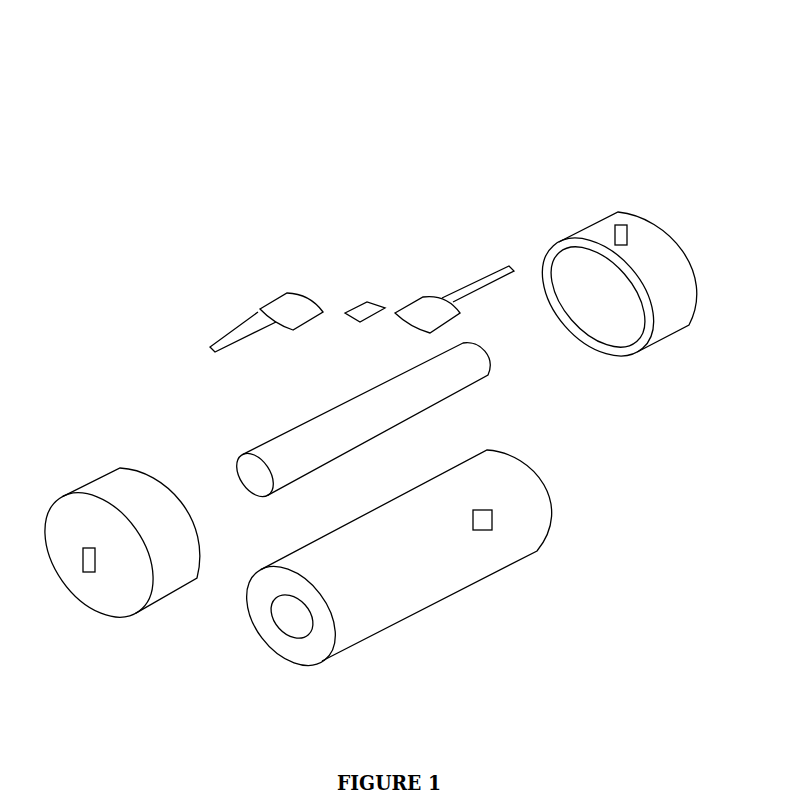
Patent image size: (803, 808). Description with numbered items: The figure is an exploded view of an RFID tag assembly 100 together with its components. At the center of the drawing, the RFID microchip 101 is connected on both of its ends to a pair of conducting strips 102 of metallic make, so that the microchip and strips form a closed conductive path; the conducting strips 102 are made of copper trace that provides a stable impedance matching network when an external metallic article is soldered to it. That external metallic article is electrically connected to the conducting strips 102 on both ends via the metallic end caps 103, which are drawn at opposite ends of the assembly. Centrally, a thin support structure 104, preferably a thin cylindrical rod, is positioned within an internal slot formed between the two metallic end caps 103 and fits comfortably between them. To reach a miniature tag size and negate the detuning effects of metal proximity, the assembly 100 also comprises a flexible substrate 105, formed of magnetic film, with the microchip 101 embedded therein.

The RFID tag assembly 100 is at (64, 126).
The RFID microchip 101 is at (365, 300).
The conducting strips 102 is at (362, 305).
The metallic end caps 103 is at (360, 422).
The support structure 104 is at (361, 423).
The flexible substrate 105 is at (389, 566).